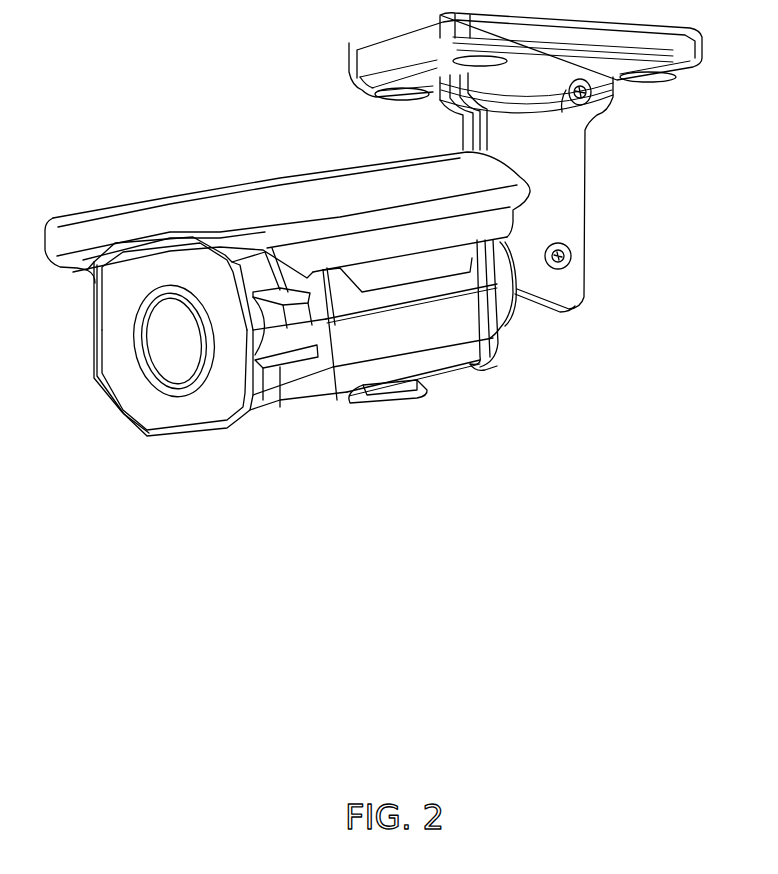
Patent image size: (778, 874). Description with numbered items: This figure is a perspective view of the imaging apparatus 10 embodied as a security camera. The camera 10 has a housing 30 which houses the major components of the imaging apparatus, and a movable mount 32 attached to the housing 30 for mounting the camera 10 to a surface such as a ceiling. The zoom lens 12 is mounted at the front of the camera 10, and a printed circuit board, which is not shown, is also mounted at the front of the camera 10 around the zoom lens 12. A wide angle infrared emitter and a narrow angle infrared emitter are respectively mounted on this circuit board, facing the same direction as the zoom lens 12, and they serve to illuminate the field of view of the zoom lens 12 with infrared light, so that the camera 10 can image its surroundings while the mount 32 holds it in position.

The imaging apparatus 10 is at (482, 508).
The zoom lens 12 is at (152, 335).
The housing 30 is at (492, 357).
The movable mount 32 is at (580, 190).